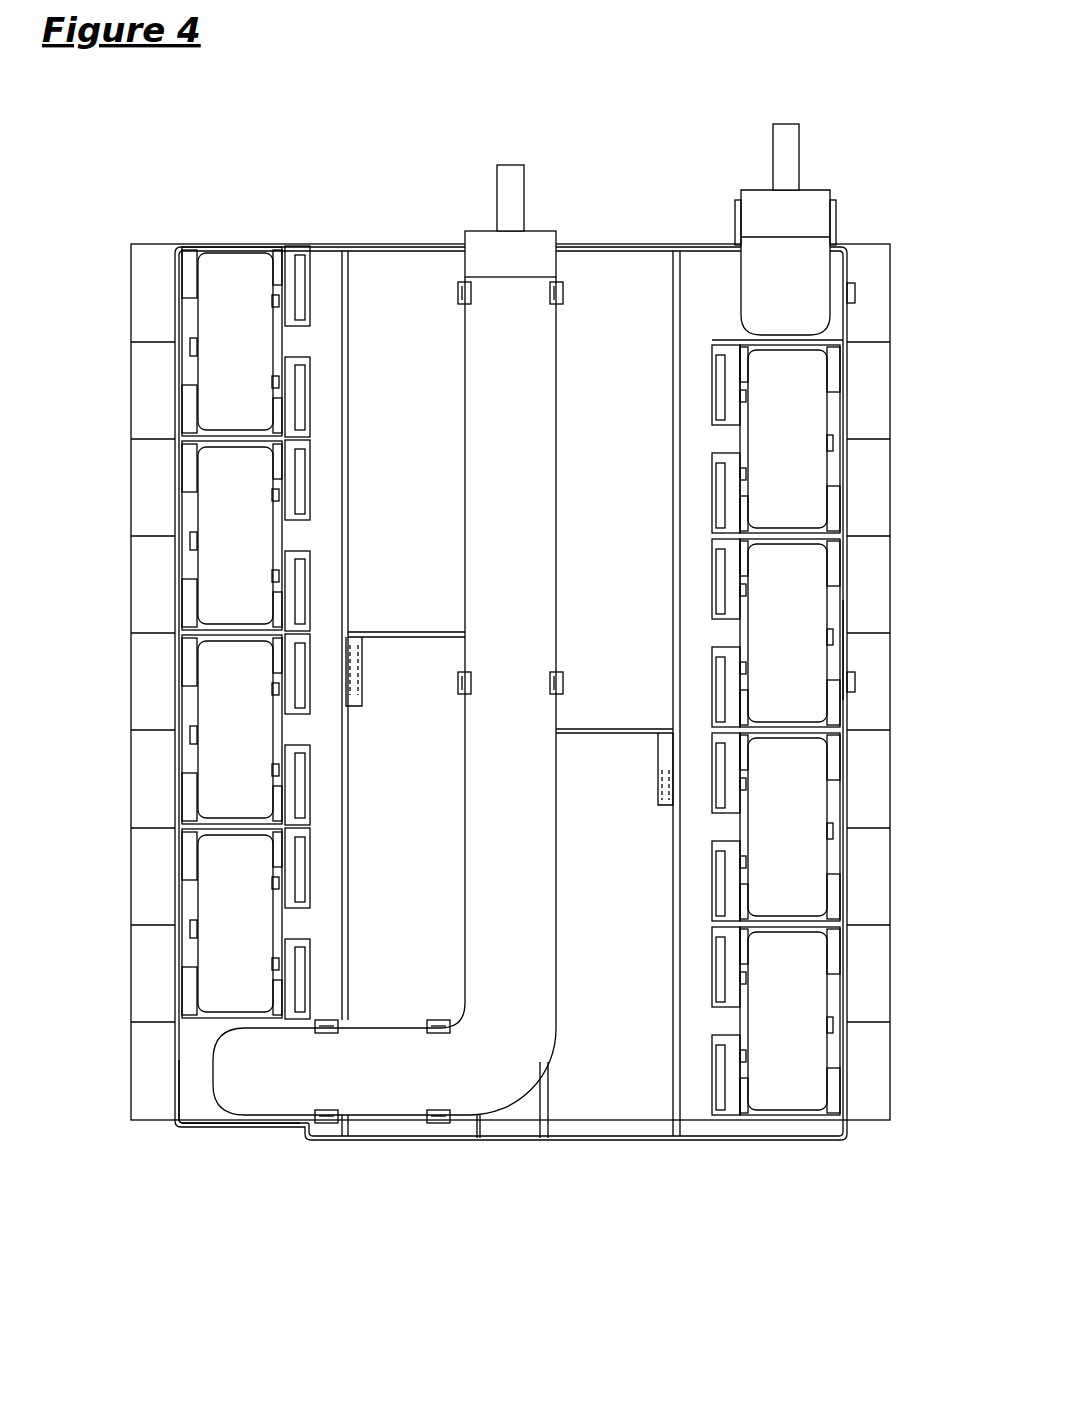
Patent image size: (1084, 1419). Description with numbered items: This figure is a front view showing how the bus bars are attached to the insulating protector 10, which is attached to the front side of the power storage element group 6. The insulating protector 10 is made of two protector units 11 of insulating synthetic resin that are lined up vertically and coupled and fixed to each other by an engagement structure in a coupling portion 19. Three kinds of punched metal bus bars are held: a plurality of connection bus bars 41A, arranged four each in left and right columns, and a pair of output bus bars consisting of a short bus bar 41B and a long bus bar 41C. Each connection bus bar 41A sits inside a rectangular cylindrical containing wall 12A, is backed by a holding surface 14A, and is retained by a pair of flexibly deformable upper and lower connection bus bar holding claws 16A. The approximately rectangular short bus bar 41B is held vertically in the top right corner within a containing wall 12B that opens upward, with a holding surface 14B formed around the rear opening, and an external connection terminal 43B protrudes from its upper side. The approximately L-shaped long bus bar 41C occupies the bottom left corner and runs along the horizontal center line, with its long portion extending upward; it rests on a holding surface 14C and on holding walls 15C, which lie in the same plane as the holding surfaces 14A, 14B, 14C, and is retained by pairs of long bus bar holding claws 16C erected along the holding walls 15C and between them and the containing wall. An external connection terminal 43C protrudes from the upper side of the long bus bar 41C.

The power storage element group 6 is at (155, 244).
The insulating protector 10 is at (425, 244).
The protector unit 11 is at (180, 527).
The containing wall 12A is at (850, 683).
The containing wall 12B is at (848, 280).
The holding surface 14A is at (838, 640).
The holding surface 14B is at (832, 333).
The holding surface 14C is at (188, 1113).
The holding wall 15C is at (542, 1125).
The connection bus bar holding claw 16A is at (830, 722).
The long bus bar holding claw 16C is at (556, 277).
The coupling portion 19 is at (350, 668).
The connection bus bar 41A is at (790, 622).
The short bus bar 41B is at (785, 288).
The long bus bar 41C is at (528, 1005).
The external connection terminal 43B is at (792, 132).
The external connection terminal 43C is at (508, 180).